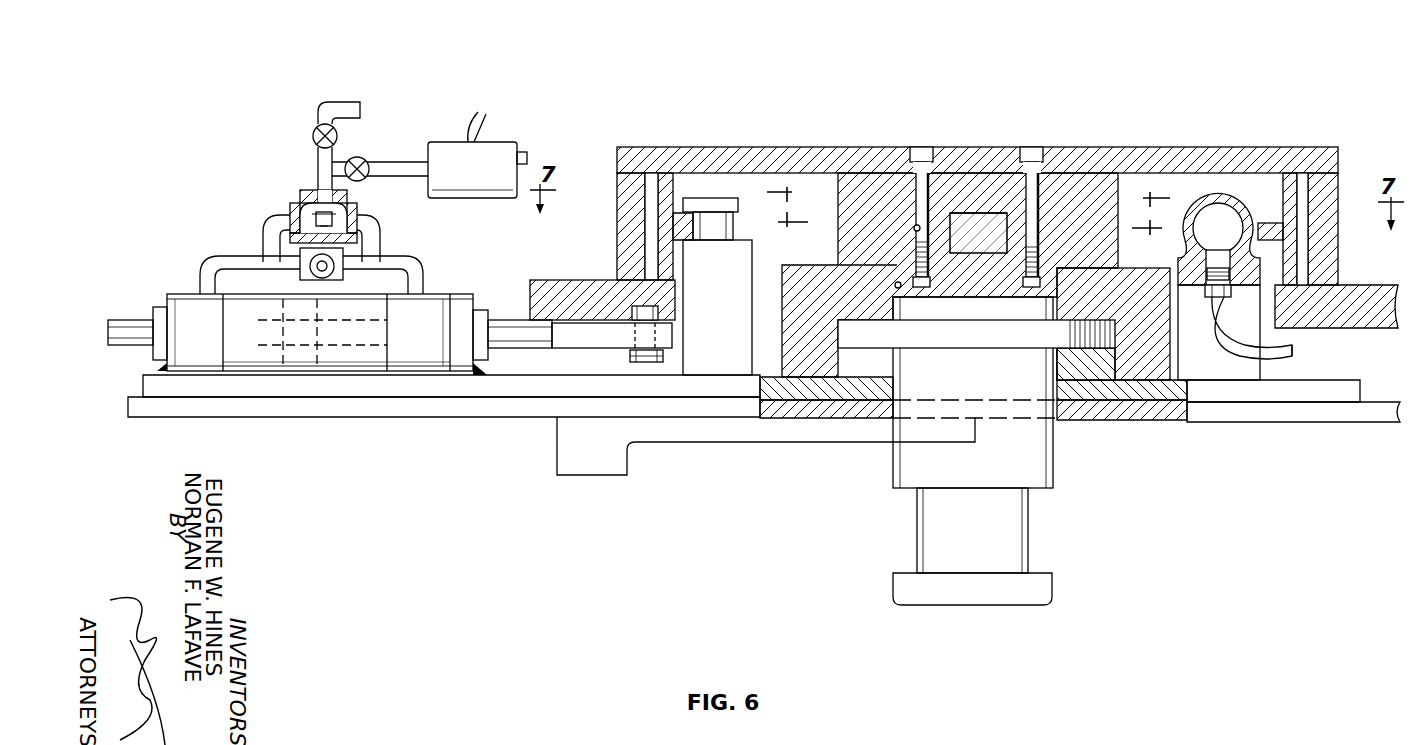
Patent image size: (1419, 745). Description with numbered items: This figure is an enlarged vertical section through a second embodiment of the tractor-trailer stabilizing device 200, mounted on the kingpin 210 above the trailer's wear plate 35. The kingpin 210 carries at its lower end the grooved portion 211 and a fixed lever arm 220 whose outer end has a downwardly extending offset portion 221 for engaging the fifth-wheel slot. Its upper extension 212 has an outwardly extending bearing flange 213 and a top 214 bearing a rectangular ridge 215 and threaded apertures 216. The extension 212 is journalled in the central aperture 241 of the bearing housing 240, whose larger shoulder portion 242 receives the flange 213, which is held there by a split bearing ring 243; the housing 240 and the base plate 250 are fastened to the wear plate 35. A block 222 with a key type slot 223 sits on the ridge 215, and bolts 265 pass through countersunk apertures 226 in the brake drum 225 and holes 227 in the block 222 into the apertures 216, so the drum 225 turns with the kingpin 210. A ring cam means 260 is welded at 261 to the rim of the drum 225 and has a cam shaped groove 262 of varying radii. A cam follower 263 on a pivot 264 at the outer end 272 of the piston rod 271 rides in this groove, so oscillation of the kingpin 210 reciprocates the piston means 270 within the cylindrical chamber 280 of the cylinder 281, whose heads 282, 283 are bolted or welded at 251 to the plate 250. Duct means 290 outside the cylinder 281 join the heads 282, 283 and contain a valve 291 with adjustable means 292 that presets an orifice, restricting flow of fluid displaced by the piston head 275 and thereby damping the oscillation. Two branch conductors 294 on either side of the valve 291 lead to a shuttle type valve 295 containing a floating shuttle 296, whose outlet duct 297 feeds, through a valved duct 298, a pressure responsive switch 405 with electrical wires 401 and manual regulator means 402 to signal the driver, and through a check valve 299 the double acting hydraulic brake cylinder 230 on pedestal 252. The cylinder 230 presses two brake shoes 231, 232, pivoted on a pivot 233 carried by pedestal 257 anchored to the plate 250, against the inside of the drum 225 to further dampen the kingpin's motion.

The wear plate 35 is at (1258, 416).
The stabilizing device 200 is at (1007, 195).
The kingpin 210 is at (1016, 451).
The grooved portion 211 is at (955, 543).
The extension 212 is at (962, 394).
The bearing flange 213 is at (959, 345).
The top of kingpin 214 is at (1045, 253).
The rectangular ridge 215 is at (958, 246).
The threaded apertures 216 is at (931, 270).
The lever arm 220 is at (760, 467).
The offset portion 221 is at (598, 463).
The block 222 is at (864, 178).
The key type slot 223 is at (957, 218).
The brake drum 225 is at (787, 150).
The countersunk apertures 226 is at (1023, 168).
The holes 227 is at (914, 228).
The hydraulic brake cylinder 230 is at (1218, 195).
The brake shoe 231 is at (673, 176).
The brake shoe 232 is at (665, 265).
The pivot 233 is at (700, 200).
The bearing housing 240 is at (1138, 262).
The central aperture 241 is at (895, 285).
The shoulder portion 242 is at (850, 318).
The bearing ring 243 is at (1108, 370).
The base plate 250 is at (182, 385).
The bolts or welds 251 is at (157, 367).
The pedestal 252 is at (1204, 371).
The pedestal 257 is at (706, 346).
The cam means 260 is at (592, 279).
The weld 261 is at (610, 272).
The cam shaped groove 262 is at (647, 310).
The cam follower 263 is at (660, 310).
The pivot 264 is at (630, 356).
The bolts 265 is at (922, 150).
The piston means 270 is at (490, 308).
The piston rod 271 is at (127, 325).
The outer end of piston rod 272 is at (580, 347).
The piston head 275 is at (300, 352).
The cylindrical chamber 280 is at (320, 372).
The cylinder 281 is at (370, 364).
The cylinder head 282 is at (405, 340).
The cylinder head 283 is at (179, 337).
The duct means 290 is at (390, 189).
The valve 291 is at (345, 262).
The adjustable means 292 is at (275, 270).
The branch conductors 294 is at (270, 240).
The shuttle type valve 295 is at (300, 192).
The nut 296 is at (316, 218).
The outlet duct 297 is at (1294, 350).
The valved duct 298 is at (365, 160).
The check valve 299 is at (316, 128).
The electrical wires 401 is at (480, 120).
The manual regulator means 402 is at (530, 156).
The pressure responsive switch 405 is at (458, 173).